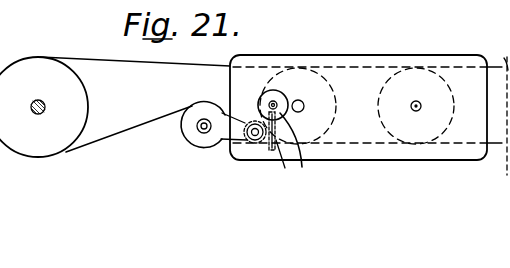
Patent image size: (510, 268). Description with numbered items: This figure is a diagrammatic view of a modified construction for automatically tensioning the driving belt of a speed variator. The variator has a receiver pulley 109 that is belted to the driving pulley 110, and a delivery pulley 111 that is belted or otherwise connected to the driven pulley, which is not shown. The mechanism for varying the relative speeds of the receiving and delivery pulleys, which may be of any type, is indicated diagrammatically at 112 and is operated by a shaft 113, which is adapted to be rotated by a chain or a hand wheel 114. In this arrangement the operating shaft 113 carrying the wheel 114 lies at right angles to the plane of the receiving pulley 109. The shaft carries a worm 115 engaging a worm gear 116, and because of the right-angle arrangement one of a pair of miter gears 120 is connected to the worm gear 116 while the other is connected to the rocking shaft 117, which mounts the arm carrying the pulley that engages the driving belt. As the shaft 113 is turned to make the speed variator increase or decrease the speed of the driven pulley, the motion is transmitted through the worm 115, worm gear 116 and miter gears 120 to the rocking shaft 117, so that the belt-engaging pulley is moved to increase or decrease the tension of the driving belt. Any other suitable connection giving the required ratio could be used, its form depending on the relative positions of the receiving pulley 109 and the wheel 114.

The receiver pulley 109 is at (331, 72).
The driving pulley 110 is at (47, 59).
The delivery pulley 111 is at (438, 68).
The speed varying mechanism 112 is at (477, 87).
The operating shaft 113 is at (310, 153).
The hand wheel 114 is at (332, 88).
The worm 115 is at (275, 100).
The worm gear 116 is at (285, 168).
The rocking shaft 117 is at (250, 140).
The miter gears 120 is at (266, 146).